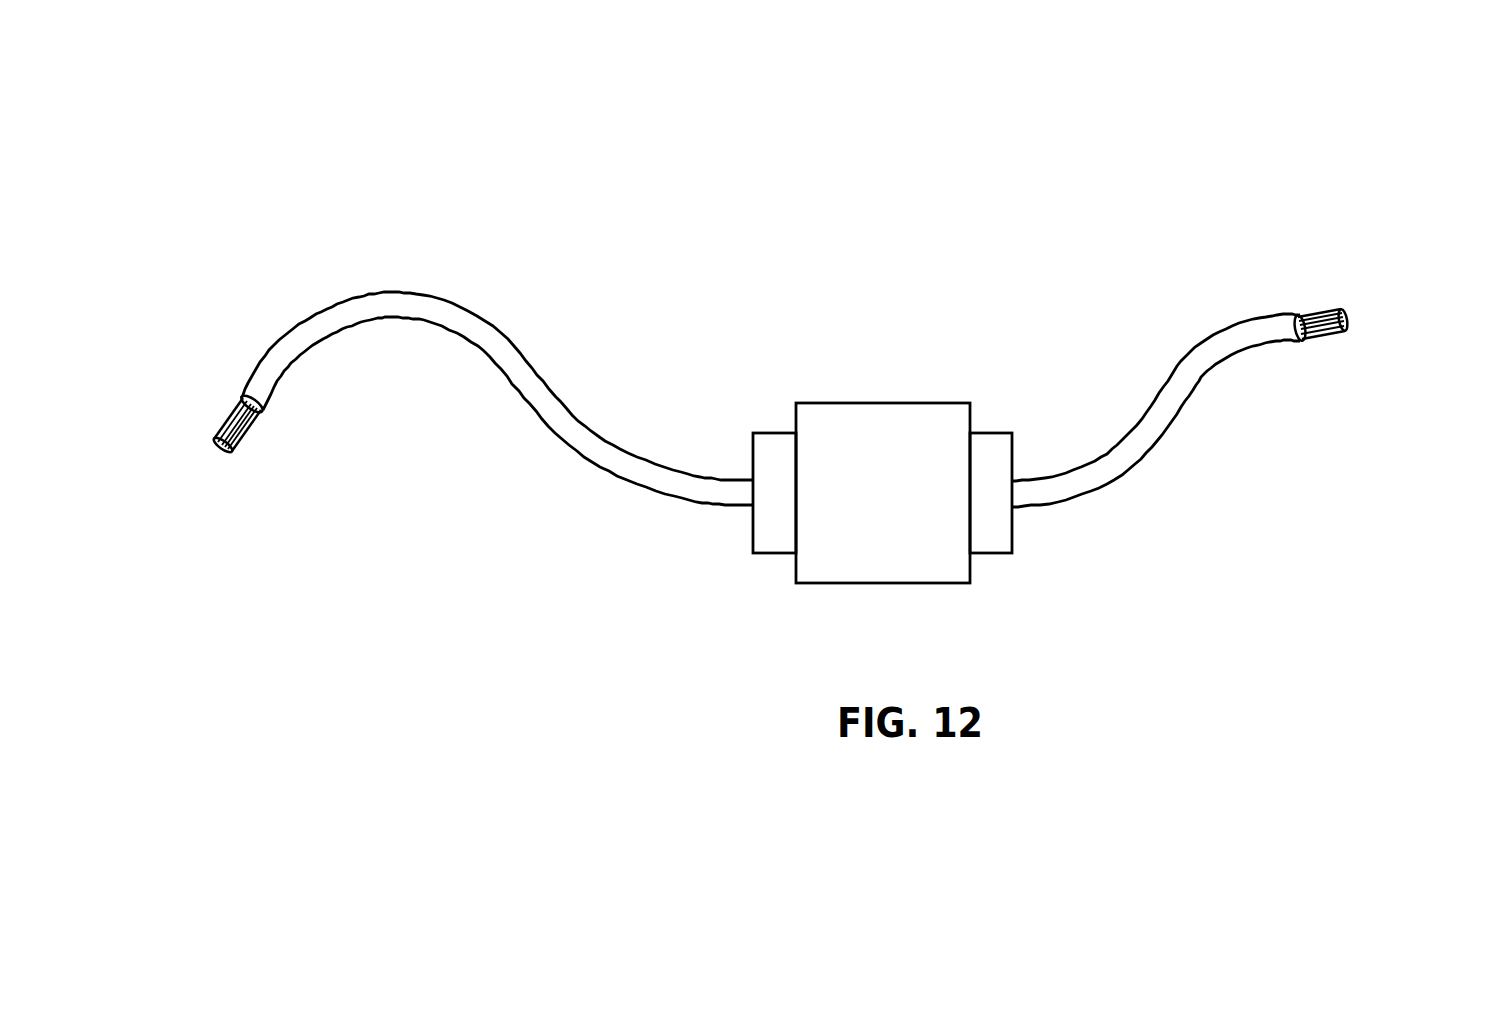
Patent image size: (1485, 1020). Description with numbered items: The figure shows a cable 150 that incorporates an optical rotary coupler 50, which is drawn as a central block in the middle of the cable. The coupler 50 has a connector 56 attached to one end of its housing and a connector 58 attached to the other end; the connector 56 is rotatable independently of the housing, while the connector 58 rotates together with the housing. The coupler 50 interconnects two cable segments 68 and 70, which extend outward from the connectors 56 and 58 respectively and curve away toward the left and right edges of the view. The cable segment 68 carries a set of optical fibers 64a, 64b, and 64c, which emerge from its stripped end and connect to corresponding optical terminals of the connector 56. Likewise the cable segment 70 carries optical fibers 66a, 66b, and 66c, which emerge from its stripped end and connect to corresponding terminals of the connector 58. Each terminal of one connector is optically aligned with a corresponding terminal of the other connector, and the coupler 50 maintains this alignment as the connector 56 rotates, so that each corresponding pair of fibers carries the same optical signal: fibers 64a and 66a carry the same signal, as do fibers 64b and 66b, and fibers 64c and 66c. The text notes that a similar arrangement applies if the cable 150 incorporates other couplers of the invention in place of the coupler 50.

The cable 150 is at (860, 218).
The optical rotary coupler 50 is at (904, 362).
The connector 56 is at (775, 430).
The connector 58 is at (988, 433).
The cable segment 68 is at (378, 293).
The cable segment 70 is at (1178, 365).
The optical fiber 64a is at (213, 445).
The optical fiber 64b is at (218, 448).
The optical fiber 64c is at (230, 450).
The optical fiber 66a is at (1338, 313).
The optical fiber 66b is at (1343, 315).
The optical fiber 66c is at (1347, 325).